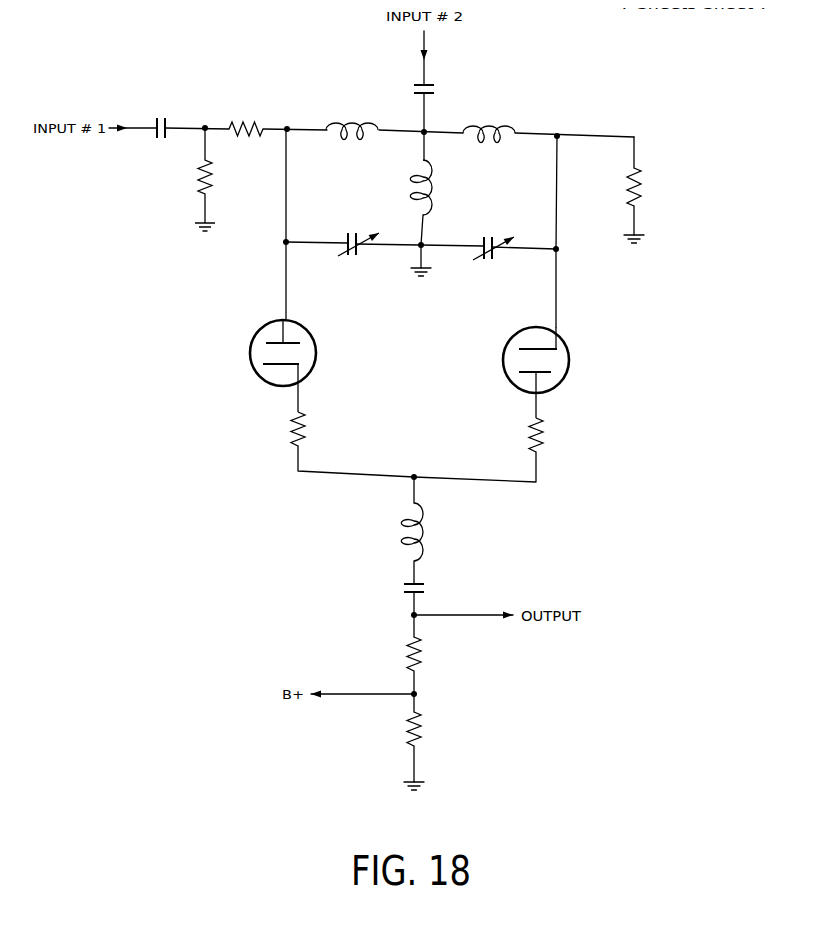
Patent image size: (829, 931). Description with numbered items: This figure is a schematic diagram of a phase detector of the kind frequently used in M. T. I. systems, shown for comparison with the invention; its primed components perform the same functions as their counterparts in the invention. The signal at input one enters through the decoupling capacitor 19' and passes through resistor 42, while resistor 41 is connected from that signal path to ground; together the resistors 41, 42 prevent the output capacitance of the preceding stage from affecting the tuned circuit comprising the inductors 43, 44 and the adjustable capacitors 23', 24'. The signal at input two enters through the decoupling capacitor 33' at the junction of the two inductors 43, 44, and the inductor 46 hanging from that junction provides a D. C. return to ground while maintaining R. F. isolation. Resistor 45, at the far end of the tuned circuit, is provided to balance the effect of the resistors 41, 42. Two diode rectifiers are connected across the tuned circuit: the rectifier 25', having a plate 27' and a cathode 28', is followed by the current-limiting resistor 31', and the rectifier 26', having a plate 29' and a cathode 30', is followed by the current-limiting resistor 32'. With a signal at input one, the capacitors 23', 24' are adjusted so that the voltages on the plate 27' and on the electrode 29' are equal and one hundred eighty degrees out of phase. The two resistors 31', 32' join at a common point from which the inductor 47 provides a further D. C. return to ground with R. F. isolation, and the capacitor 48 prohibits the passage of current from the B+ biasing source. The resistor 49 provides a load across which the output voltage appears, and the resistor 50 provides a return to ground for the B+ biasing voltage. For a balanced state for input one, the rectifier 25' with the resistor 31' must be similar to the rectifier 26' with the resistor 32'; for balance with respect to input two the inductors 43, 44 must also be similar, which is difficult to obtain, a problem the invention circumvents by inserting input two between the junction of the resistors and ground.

The decoupling capacitor 19' is at (181, 114).
The resistor 41 is at (212, 176).
The resistor 42 is at (245, 125).
The inductor 43 is at (350, 126).
The inductor 44 is at (498, 129).
The decoupling capacitor 33' is at (445, 80).
The inductor 46 is at (432, 186).
The resistor 45 is at (641, 188).
The capacitor 23' is at (346, 231).
The capacitor 24' is at (494, 234).
The rectifier 25' is at (269, 344).
The plate 27' is at (306, 327).
The cathode 28' is at (312, 383).
The resistor 31' is at (323, 425).
The rectifier 26' is at (521, 351).
The cathode 29' is at (563, 334).
The cathode 30' is at (563, 395).
The resistor 32' is at (559, 435).
The inductor 47 is at (430, 527).
The capacitor 48 is at (426, 586).
The resistor 49 is at (425, 656).
The resistor 50 is at (425, 724).